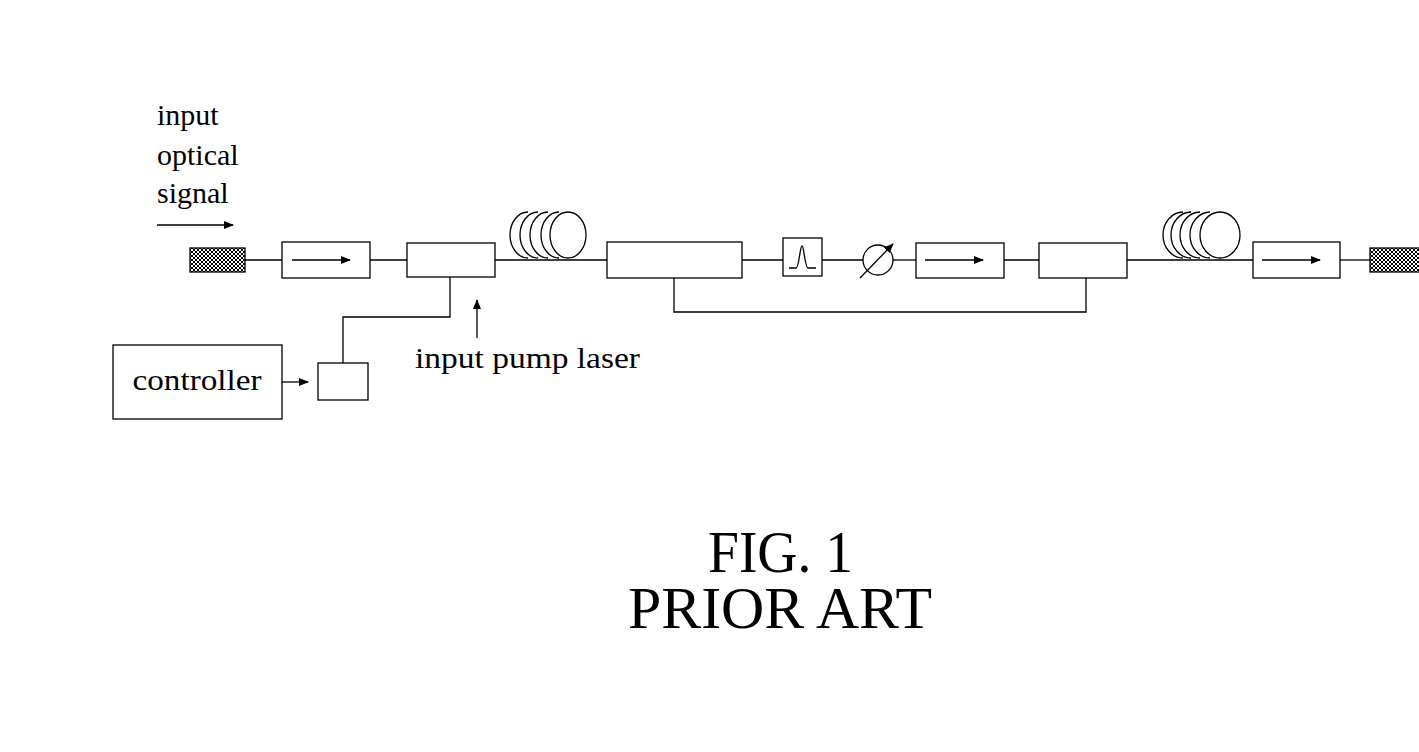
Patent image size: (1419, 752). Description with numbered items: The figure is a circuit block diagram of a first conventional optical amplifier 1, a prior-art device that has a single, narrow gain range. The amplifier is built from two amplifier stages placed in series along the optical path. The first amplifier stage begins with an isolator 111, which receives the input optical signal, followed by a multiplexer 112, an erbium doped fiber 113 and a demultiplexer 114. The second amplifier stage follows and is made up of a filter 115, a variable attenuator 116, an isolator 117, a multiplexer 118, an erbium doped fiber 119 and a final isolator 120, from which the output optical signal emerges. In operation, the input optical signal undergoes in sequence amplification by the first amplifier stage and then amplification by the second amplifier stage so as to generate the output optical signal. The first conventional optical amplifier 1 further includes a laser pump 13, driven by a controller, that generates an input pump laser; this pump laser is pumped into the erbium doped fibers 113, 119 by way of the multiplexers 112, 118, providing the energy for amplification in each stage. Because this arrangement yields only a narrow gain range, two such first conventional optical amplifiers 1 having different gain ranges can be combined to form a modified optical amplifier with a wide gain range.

The first conventional optical amplifier 1 is at (548, 93).
The isolator 111 is at (327, 242).
The multiplexer 112 is at (448, 243).
The erbium doped fiber 113 is at (548, 212).
The demultiplexer 114 is at (643, 242).
The filter 115 is at (800, 238).
The variable attenuator 116 is at (867, 245).
The isolator 117 is at (958, 243).
The multiplexer 118 is at (1103, 243).
The erbium doped fiber 119 is at (1202, 212).
The isolator 120 is at (1300, 242).
The laser pump 13 is at (330, 363).